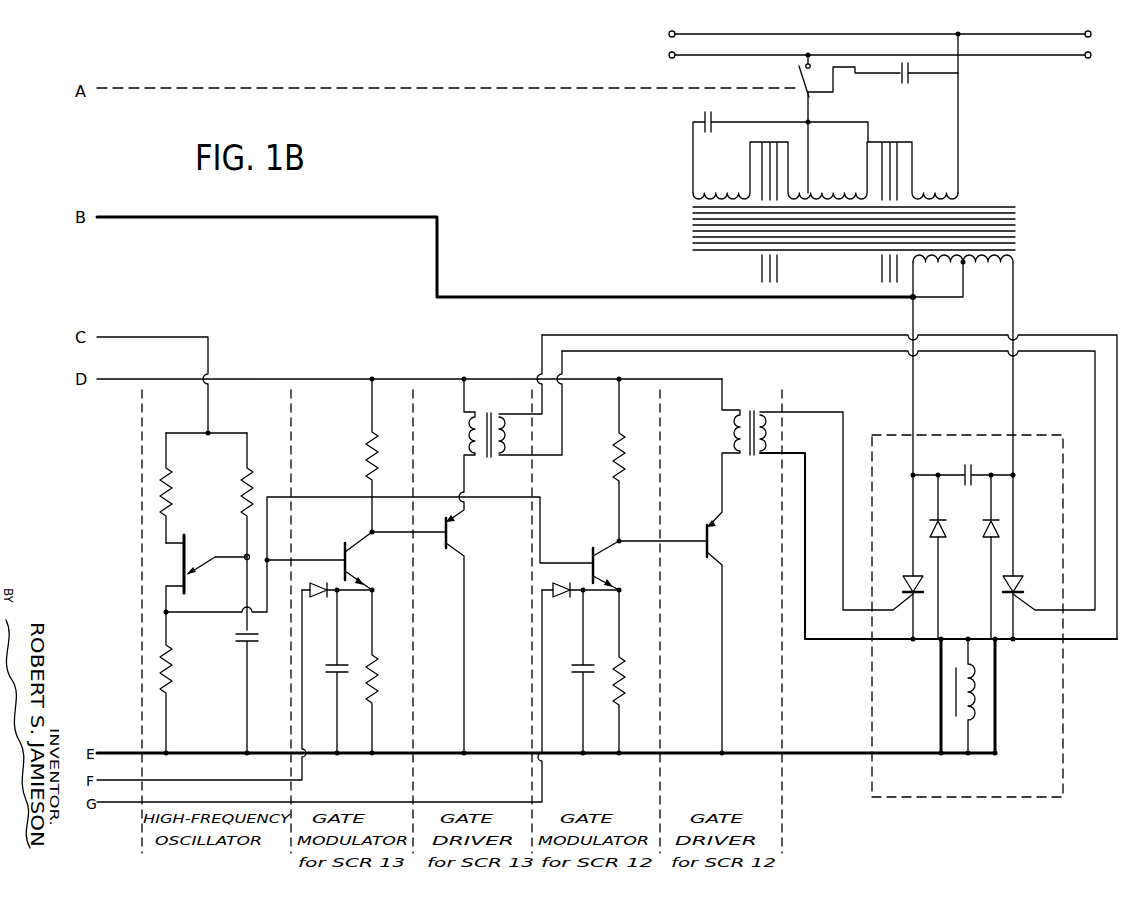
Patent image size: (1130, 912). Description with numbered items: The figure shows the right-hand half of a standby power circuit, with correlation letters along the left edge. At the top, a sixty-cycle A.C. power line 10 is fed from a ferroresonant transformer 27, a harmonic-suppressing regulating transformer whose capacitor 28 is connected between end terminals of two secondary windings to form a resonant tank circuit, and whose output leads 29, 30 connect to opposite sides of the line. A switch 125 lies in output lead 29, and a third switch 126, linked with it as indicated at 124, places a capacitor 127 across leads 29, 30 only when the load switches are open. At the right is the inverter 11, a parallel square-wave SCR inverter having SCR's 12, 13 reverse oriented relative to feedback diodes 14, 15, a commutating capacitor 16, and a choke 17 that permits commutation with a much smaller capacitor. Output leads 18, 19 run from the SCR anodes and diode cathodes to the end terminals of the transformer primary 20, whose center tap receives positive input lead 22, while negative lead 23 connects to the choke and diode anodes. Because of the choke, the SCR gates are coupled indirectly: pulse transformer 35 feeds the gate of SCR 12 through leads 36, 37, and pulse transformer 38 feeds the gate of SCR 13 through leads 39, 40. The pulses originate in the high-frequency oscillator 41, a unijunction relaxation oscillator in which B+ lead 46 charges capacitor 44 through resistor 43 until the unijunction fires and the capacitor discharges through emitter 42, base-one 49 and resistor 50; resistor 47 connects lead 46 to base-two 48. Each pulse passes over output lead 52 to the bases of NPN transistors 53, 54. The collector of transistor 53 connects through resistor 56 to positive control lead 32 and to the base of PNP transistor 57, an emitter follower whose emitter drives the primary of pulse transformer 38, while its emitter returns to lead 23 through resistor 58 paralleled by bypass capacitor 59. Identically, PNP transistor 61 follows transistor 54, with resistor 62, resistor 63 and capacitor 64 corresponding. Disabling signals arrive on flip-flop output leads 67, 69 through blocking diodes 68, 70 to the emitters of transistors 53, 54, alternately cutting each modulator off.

The A.C. power line 10 is at (1040, 34).
The inverter 11 is at (1066, 684).
The SCR 12 is at (905, 580).
The SCR 13 is at (1018, 580).
The feedback diode 14 is at (946, 530).
The feedback diode 15 is at (998, 528).
The commutating capacitor 16 is at (973, 466).
The choke 17 is at (976, 688).
The output lead 18 is at (914, 318).
The output lead 19 is at (1014, 328).
The transformer primary 20 is at (990, 268).
The input lead 22 is at (852, 300).
The negative lead 23 is at (838, 755).
The ferroresonant transformer 27 is at (678, 160).
The capacitor 28 is at (718, 128).
The output lead 29 is at (810, 106).
The output lead 30 is at (960, 128).
The positive control lead 32 is at (330, 378).
The pulse transformer 35 is at (756, 402).
The lead 36 is at (841, 538).
The lead 37 is at (830, 640).
The pulse transformer 38 is at (478, 410).
The lead 39 is at (814, 340).
The lead 40 is at (818, 352).
The high-frequency oscillator 41 is at (260, 413).
The emitter 42 is at (200, 572).
The resistor 43 is at (243, 490).
The capacitor 44 is at (240, 646).
The lead 46 is at (140, 337).
The resistor 47 is at (170, 480).
The base-two 48 is at (170, 538).
The base-one 49 is at (176, 600).
The resistor 50 is at (170, 666).
The output lead 52 is at (215, 616).
The NPN transistor 53 is at (354, 540).
The NPN transistor 54 is at (608, 527).
The resistor 56 is at (376, 450).
The PNP transistor 57 is at (452, 536).
The resistor 58 is at (383, 648).
The capacitor 59 is at (328, 676).
The PNP transistor 61 is at (712, 541).
The resistor 62 is at (622, 445).
The resistor 63 is at (622, 658).
The capacitor 64 is at (586, 662).
The output lead 67 is at (303, 779).
The blocking diode 68 is at (318, 600).
The output lead 69 is at (496, 800).
The blocking diode 70 is at (560, 600).
The connection 124 is at (461, 90).
The switch 125 is at (799, 87).
The third switch 126 is at (837, 76).
The capacitor 127 is at (915, 85).